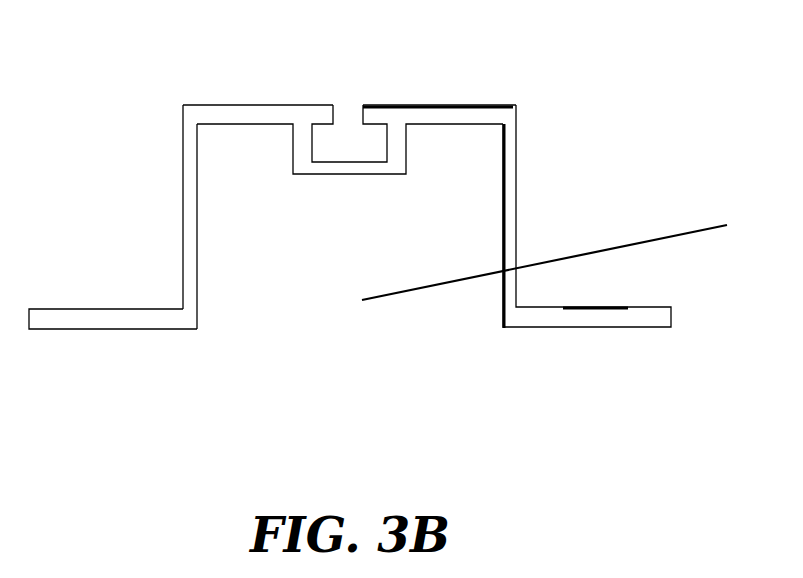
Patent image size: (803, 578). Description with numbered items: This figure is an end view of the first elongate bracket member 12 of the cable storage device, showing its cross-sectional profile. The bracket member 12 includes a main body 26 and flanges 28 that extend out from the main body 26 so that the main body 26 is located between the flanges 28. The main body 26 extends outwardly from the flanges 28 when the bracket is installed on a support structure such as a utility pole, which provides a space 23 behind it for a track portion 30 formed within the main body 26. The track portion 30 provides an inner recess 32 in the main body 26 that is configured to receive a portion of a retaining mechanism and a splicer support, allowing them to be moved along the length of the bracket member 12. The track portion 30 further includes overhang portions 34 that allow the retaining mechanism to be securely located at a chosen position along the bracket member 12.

The first elongate bracket member 12 is at (130, 62).
The space 23 is at (566, 249).
The main body 26 is at (188, 234).
The flanges 28 is at (123, 322).
The track portion 30 is at (304, 168).
The inner recess 32 is at (372, 152).
The overhang portions 34 is at (377, 112).